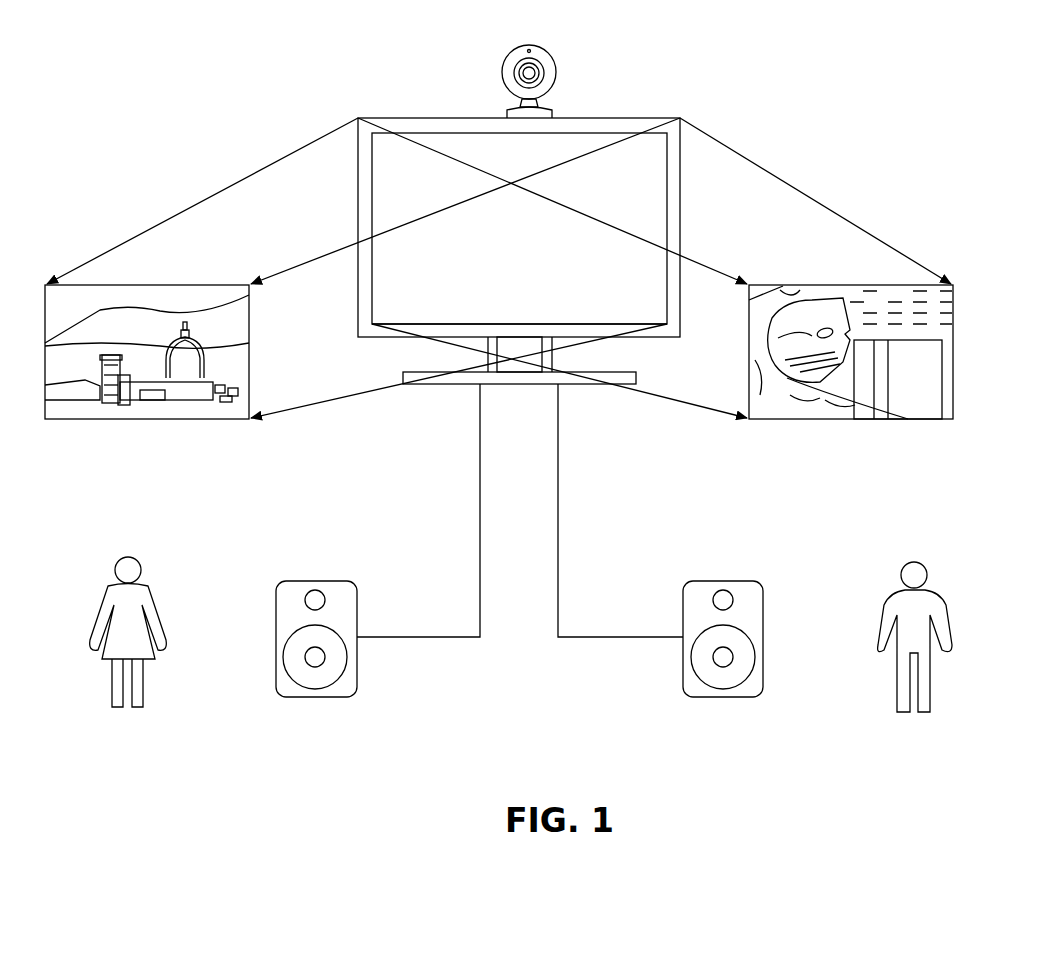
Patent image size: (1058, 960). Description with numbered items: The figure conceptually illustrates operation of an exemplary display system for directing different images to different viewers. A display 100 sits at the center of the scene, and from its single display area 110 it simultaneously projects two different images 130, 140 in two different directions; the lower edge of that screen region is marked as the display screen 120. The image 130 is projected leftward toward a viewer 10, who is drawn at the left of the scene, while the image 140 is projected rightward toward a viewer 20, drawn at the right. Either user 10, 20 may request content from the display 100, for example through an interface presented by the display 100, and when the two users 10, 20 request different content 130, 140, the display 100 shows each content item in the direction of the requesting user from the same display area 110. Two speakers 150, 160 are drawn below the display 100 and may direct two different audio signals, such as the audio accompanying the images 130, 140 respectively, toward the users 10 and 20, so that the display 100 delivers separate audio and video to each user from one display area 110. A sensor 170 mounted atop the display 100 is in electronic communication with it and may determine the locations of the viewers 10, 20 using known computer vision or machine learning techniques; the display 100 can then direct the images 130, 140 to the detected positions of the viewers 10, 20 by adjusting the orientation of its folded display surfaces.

The viewer 10 is at (130, 555).
The viewer 20 is at (912, 560).
The display 100 is at (435, 117).
The display area 110 is at (638, 311).
The display screen 120 is at (405, 322).
The image 130 is at (117, 420).
The image 140 is at (821, 420).
The speaker 150 is at (318, 580).
The speaker 160 is at (723, 580).
The sensor 170 is at (530, 45).